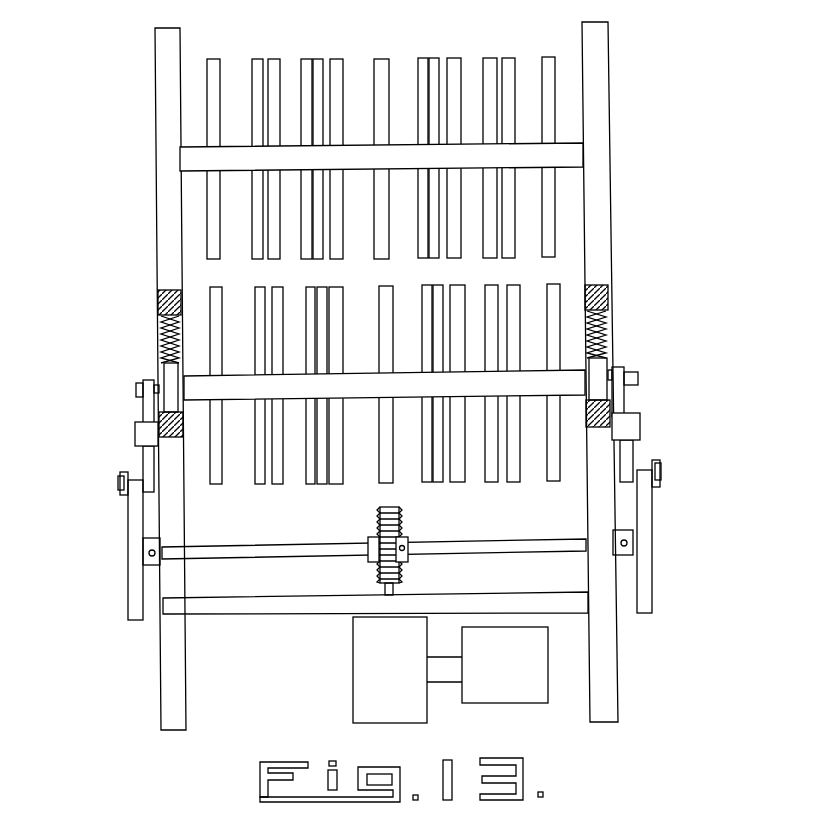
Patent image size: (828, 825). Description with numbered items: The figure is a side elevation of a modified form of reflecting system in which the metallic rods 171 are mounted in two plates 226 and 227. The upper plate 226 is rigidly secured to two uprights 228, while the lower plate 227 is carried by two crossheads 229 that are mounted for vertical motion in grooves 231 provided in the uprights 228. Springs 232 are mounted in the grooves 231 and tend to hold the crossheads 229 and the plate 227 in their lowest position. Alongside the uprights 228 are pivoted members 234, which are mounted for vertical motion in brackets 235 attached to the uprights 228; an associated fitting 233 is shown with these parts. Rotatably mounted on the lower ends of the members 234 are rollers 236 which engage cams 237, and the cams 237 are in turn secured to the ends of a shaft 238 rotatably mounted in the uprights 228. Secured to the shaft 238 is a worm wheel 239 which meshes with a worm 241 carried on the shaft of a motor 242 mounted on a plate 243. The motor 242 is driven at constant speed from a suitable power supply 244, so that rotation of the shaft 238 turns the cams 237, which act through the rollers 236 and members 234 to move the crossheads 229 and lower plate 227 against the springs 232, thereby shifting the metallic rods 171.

The metallic rods 171 is at (440, 58).
The plate 226 is at (585, 153).
The plate 227 is at (245, 401).
The uprights 228 is at (155, 104).
The crossheads 229 is at (162, 371).
The grooves 231 is at (160, 323).
The springs 232 is at (160, 340).
The bracket 233 is at (136, 390).
The pivoted members 234 is at (146, 410).
The brackets 235 is at (135, 434).
The rollers 236 is at (120, 473).
The cams 237 is at (136, 555).
The shaft 238 is at (334, 557).
The worm wheel 239 is at (378, 512).
The worm 241 is at (402, 536).
The motor 242 is at (362, 676).
The plate 243 is at (330, 613).
The power supply 244 is at (540, 704).